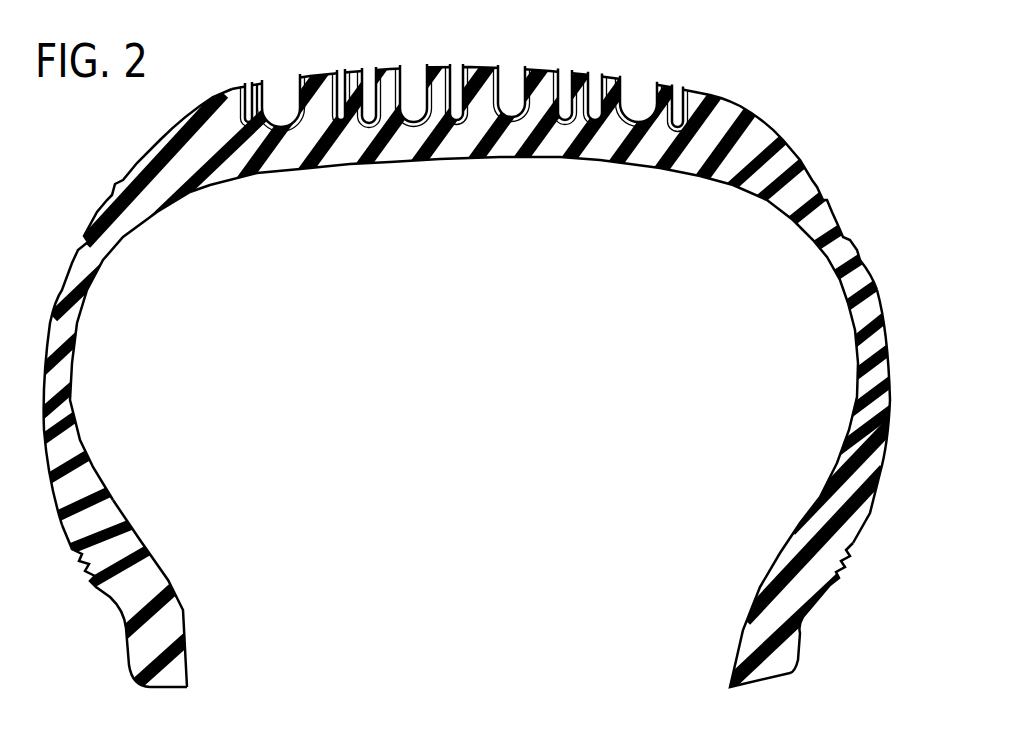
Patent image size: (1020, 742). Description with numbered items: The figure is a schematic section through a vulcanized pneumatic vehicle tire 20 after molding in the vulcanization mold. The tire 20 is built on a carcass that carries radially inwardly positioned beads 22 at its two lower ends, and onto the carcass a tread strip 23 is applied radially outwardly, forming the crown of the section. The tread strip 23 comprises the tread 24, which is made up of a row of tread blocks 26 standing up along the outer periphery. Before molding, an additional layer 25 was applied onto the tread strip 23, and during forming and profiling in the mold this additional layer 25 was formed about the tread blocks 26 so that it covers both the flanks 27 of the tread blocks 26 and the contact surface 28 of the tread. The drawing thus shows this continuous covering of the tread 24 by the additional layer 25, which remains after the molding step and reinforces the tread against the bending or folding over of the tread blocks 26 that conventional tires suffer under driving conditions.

The pneumatic vehicle tire 20 is at (814, 95).
The beads 22 is at (163, 640).
The tread strip 23 is at (409, 133).
The tread 24 is at (640, 78).
The additional layer 25 is at (704, 87).
The tread blocks 26 is at (377, 77).
The flanks 27 is at (281, 94).
The contact surface 28 is at (543, 70).